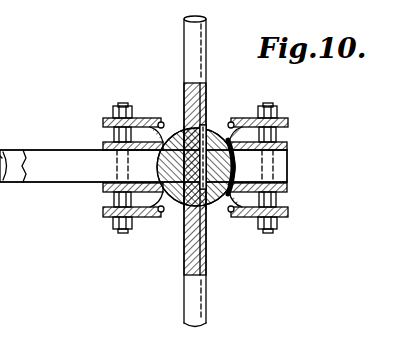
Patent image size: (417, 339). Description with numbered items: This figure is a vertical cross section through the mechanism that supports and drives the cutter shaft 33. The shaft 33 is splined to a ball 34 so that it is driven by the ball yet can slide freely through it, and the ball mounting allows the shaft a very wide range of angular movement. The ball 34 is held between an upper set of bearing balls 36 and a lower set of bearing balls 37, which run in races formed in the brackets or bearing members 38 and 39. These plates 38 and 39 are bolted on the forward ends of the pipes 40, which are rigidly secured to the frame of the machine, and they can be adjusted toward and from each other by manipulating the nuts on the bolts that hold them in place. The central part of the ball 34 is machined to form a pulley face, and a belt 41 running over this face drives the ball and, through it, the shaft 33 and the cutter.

The shaft 33 is at (195, 52).
The ball 34 is at (165, 121).
The upper set of bearing balls 36 is at (232, 117).
The lower set of bearing balls 37 is at (158, 219).
The bracket or bearing member 38 is at (104, 121).
The bracket or bearing member 39 is at (243, 219).
The pipe 40 is at (14, 172).
The belt 41 is at (92, 173).